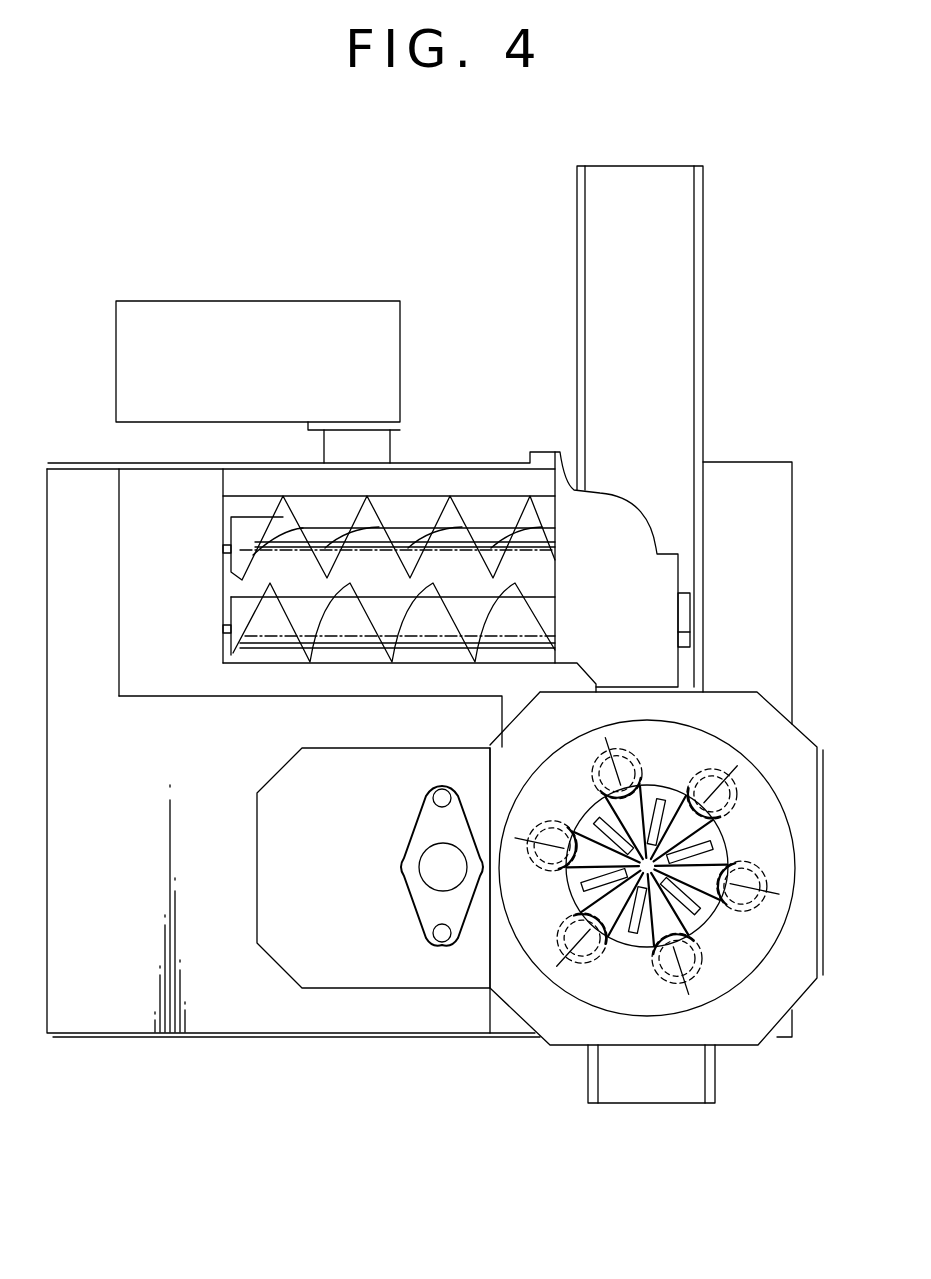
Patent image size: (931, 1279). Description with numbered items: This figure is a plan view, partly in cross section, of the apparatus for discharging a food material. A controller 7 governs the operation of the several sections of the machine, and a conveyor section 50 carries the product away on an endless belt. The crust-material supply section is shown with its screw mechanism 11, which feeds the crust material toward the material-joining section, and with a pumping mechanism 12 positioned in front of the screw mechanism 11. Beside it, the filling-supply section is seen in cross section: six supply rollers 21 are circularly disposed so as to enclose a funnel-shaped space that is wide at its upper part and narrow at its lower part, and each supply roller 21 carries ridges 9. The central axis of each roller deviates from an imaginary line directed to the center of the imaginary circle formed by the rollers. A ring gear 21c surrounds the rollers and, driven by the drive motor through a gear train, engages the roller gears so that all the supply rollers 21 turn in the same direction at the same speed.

The controller 7 is at (345, 300).
The conveyor section 50 is at (703, 262).
The pumping mechanism 12 is at (626, 500).
The screw mechanism 11 is at (275, 637).
The ridges 9 is at (653, 886).
The supply rollers 21 is at (703, 900).
The ring gear 21c is at (770, 832).